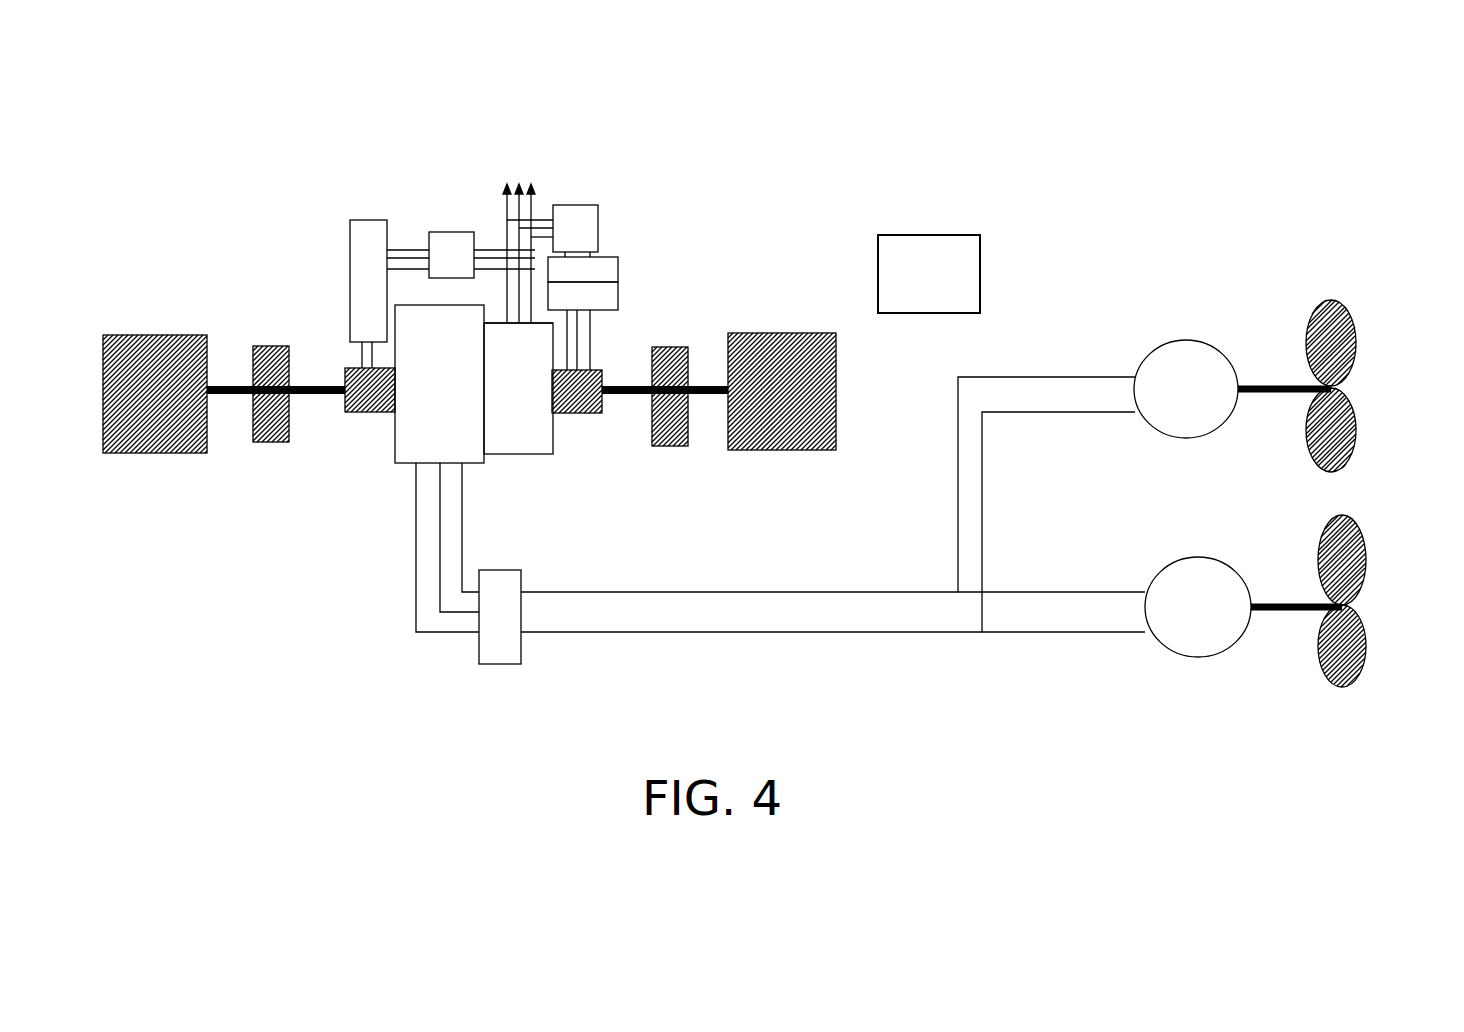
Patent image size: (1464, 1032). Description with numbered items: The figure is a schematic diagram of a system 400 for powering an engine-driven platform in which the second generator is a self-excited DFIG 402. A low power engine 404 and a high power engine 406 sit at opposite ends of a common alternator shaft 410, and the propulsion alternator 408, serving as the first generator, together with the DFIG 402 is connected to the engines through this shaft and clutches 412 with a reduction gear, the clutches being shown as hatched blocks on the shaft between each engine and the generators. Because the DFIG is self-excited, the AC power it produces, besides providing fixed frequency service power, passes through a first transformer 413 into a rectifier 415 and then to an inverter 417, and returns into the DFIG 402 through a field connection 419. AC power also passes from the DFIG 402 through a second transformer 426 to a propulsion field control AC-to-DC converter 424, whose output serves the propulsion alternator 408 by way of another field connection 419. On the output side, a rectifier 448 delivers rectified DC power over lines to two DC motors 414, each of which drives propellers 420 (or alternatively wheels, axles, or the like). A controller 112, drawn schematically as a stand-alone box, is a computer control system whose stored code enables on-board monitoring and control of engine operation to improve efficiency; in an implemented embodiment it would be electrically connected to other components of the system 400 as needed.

The system 400 is at (893, 93).
The controller 112 is at (929, 274).
The self-excited DFIG 402 is at (523, 455).
The low power engine 404 is at (130, 452).
The high power engine 406 is at (787, 452).
The propulsion alternator 408 is at (463, 455).
The common alternator shaft 410 is at (308, 396).
The clutches 412 is at (277, 430).
The first transformer 413 is at (598, 205).
The DC motor 414 is at (1213, 427).
The rectifier 415 is at (618, 265).
The inverter 417 is at (618, 298).
The field connection 419 is at (374, 412).
The propellers 420 is at (1357, 425).
The propulsion field control AC-to-DC converter 424 is at (360, 220).
The second transformer 426 is at (447, 232).
The rectifier 448 is at (512, 649).